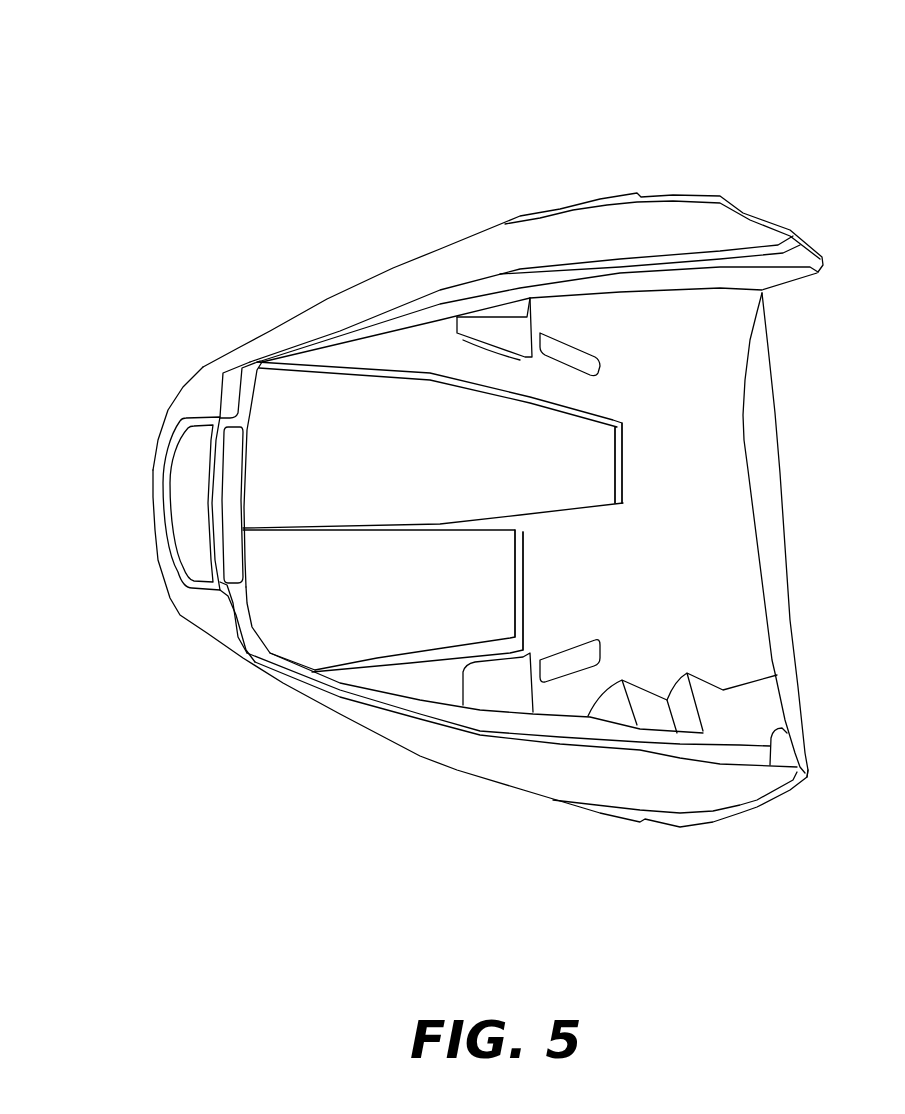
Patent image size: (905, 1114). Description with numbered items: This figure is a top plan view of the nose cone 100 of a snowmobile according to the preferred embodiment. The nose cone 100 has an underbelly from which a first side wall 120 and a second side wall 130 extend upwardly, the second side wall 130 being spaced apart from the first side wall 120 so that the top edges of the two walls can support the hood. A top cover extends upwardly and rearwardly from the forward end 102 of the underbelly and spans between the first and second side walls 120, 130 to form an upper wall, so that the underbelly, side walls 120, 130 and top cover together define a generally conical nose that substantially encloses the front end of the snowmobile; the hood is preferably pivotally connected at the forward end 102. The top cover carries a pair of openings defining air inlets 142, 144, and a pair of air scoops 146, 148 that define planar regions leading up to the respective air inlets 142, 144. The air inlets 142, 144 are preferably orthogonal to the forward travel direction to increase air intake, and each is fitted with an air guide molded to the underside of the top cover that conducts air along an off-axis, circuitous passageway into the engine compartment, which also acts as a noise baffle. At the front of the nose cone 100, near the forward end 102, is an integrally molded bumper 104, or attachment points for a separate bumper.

The nose cone 100 is at (494, 140).
The forward end 102 is at (151, 530).
The bumper 104 is at (197, 394).
The second side wall 130 is at (690, 213).
The first side wall 120 is at (533, 777).
The air inlet 142 is at (521, 595).
The air inlet 144 is at (626, 470).
The air scoop 146 is at (438, 603).
The air scoop 148 is at (438, 471).